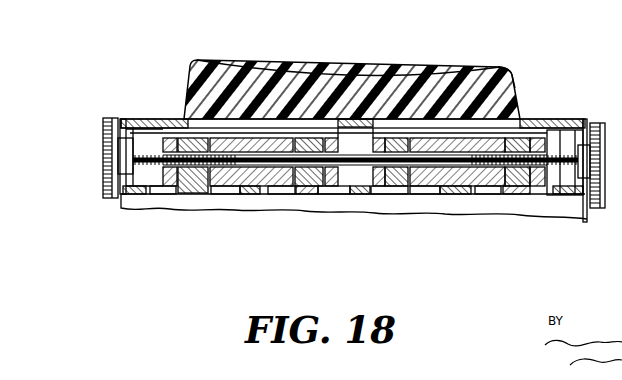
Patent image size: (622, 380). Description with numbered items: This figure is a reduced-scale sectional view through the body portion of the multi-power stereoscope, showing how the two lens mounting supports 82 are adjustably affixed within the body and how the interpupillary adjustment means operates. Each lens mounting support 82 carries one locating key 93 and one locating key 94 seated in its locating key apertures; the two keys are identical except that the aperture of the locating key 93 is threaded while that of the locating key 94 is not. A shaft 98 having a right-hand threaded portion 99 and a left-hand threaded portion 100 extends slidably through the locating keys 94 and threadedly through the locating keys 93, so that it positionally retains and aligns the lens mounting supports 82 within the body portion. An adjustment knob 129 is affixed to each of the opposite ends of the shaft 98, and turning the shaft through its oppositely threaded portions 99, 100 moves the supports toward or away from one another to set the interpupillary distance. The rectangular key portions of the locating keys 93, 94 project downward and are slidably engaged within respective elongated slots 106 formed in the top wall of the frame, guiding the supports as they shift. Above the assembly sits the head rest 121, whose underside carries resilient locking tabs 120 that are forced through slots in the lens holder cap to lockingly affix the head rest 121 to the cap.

The lens mounting support 82 is at (159, 136).
The locking tab 120 is at (259, 119).
The head rest 121 is at (547, 31).
The shaft 98 is at (569, 148).
The adjustment knob 129 is at (110, 118).
The right-hand threaded portion 99 is at (574, 207).
The left-hand threaded portion 100 is at (143, 208).
The locating key 93 is at (170, 194).
The elongated slot 106 is at (218, 194).
The locating key 94 is at (327, 212).